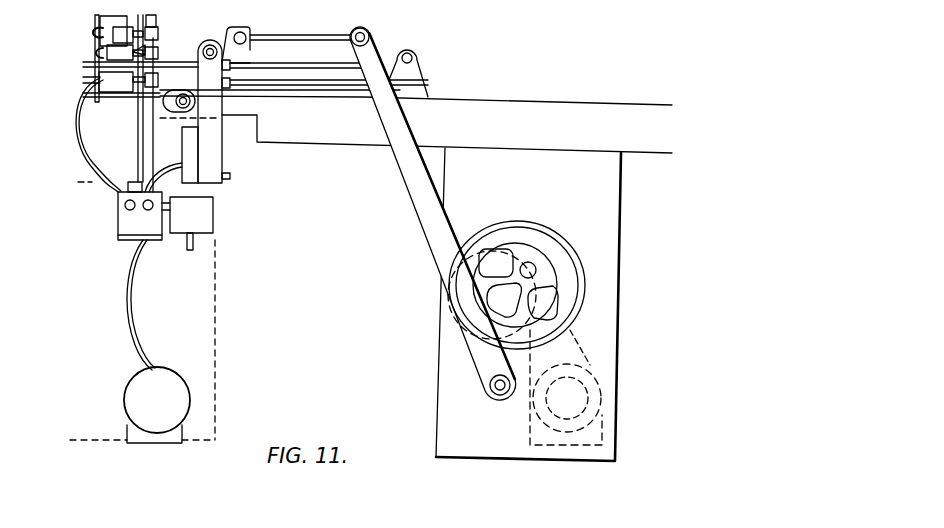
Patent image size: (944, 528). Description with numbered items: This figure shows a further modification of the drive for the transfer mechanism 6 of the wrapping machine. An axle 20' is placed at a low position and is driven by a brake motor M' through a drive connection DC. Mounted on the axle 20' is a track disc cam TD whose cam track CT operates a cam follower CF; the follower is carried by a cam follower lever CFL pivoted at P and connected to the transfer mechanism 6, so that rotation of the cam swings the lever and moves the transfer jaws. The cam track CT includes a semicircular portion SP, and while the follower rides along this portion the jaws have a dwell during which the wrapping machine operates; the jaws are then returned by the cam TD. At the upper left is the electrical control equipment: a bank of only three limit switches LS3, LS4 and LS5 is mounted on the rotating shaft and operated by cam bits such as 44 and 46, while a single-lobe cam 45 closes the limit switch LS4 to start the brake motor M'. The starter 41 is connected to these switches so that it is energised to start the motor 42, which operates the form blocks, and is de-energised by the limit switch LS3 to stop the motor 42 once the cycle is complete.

The limit switch LS5 is at (112, 36).
The limit switch LS4 is at (153, 53).
The limit switch LS3 is at (124, 88).
The cam bit 46 is at (156, 32).
The transfer mechanism 6 is at (209, 32).
The cam 45 is at (152, 53).
The cam bit 44 is at (152, 86).
The starter 41 is at (130, 220).
The motor 42 is at (157, 400).
The axle 20' is at (519, 201).
The cam follower lever CFL is at (410, 172).
The track disc cam TD is at (482, 245).
The cam track CT is at (563, 277).
The cam follower CF is at (450, 293).
The semicircular portion of cam track SP is at (512, 333).
The pivot P is at (497, 387).
The drive connection DC is at (582, 364).
The brake motor M' is at (537, 390).